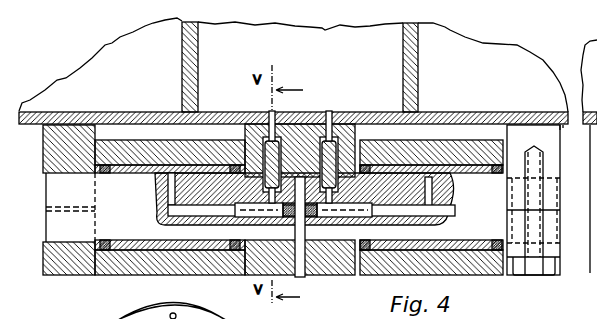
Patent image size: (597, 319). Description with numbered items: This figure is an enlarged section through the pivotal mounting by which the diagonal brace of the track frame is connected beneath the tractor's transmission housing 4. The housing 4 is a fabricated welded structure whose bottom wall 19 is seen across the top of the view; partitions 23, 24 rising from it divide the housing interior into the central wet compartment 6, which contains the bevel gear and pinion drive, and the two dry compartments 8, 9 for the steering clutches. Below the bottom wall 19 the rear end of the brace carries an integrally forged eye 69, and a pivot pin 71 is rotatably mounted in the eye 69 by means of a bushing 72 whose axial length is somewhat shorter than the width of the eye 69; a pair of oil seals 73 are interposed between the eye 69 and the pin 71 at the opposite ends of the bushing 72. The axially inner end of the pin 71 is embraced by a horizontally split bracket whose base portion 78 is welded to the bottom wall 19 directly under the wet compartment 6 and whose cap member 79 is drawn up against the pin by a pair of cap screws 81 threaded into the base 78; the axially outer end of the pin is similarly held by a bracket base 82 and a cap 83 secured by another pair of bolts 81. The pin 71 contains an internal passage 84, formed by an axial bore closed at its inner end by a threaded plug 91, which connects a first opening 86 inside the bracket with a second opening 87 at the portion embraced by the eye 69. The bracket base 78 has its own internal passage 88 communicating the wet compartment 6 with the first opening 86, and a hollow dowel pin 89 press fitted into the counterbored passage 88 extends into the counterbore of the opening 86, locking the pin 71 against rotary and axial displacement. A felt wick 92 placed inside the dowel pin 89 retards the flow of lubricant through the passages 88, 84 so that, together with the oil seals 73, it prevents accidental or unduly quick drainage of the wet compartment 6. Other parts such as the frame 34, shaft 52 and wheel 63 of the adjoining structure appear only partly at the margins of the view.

The transmission housing 4 is at (521, 80).
The central wet compartment 6 is at (324, 28).
The dry compartment 8 is at (120, 42).
The dry compartment 9 is at (490, 44).
The bottom wall 19 is at (132, 111).
The partition 23 is at (182, 48).
The partition 24 is at (418, 48).
The frame 34 is at (246, 318).
The shaft 52 is at (88, 317).
The wheel 63 is at (145, 312).
The eye 69 is at (190, 276).
The pivot pin 71 is at (50, 222).
The bushing 72 is at (138, 174).
The oil seals 73 is at (104, 240).
The bracket base 78 is at (303, 127).
The cap member 79 is at (302, 278).
The cap screws 81 is at (528, 276).
The bracket base 82 is at (42, 141).
The cap 83 is at (62, 272).
The internal passage 84 is at (198, 218).
The first opening 86 is at (281, 218).
The second opening 87 is at (157, 194).
The internal passage 88 is at (270, 112).
The hollow dowel pin 89 is at (245, 134).
The threaded plug 91 is at (316, 218).
The felt wick 92 is at (330, 112).